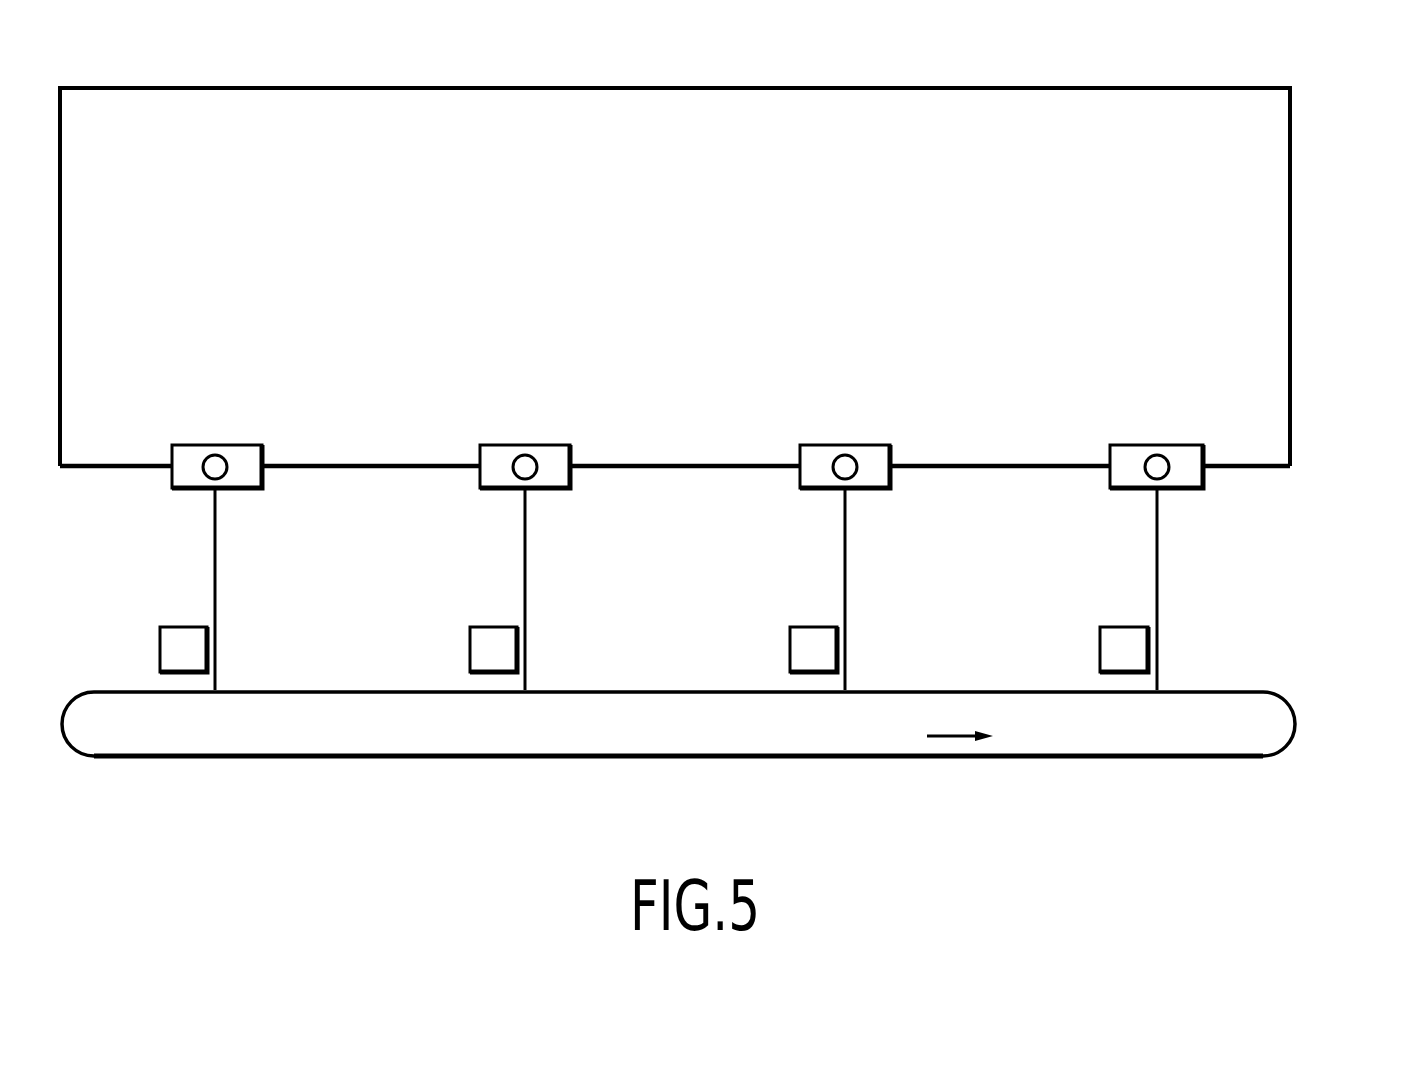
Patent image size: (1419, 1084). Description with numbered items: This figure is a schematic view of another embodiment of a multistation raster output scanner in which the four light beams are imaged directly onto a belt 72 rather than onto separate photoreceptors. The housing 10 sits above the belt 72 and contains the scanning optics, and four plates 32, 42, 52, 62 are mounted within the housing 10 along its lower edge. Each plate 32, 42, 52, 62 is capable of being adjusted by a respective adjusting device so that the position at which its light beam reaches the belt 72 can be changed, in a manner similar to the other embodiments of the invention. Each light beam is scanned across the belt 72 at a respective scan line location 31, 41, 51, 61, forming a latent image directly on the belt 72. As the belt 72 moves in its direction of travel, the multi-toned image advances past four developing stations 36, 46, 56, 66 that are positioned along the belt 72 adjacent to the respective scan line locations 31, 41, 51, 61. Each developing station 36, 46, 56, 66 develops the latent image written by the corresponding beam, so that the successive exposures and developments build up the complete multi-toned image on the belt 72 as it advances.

The housing 10 is at (1292, 277).
The scan line location 31 is at (218, 688).
The plate 32 is at (240, 490).
The developing station 36 is at (178, 627).
The scan line location 41 is at (525, 690).
The plate 42 is at (542, 490).
The developing station 46 is at (492, 627).
The scan line location 51 is at (848, 688).
The plate 52 is at (865, 490).
The developing station 56 is at (810, 627).
The scan line location 61 is at (1160, 688).
The plate 62 is at (1190, 490).
The developing station 66 is at (1122, 627).
The belt 72 is at (1057, 758).